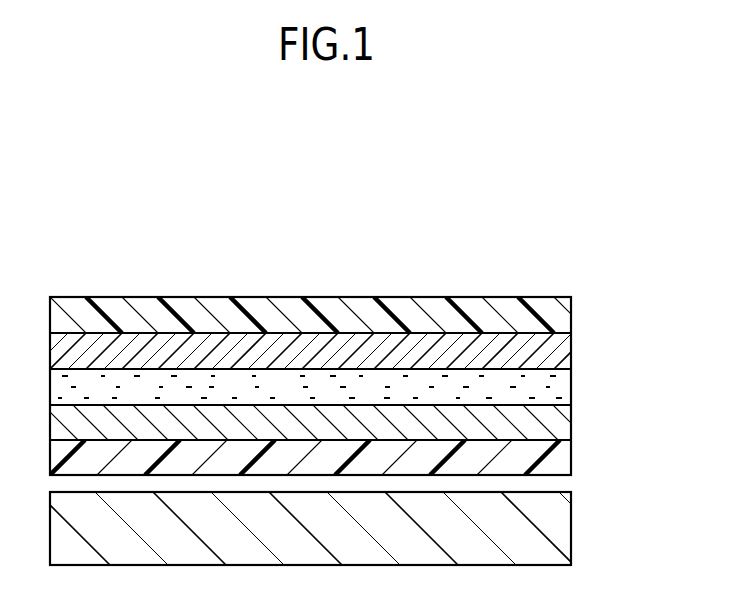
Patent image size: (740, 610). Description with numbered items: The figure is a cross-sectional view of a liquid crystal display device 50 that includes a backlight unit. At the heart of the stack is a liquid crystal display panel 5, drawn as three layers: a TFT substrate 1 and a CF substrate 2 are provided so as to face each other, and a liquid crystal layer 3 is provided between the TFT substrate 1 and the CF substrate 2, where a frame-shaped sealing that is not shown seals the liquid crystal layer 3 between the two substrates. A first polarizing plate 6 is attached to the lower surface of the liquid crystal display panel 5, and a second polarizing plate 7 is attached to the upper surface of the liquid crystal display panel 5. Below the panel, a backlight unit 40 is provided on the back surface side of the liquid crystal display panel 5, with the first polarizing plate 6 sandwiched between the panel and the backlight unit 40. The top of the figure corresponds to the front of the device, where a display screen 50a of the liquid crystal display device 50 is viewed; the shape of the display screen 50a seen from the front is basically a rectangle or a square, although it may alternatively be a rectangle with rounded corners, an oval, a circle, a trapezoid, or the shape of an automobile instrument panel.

The liquid crystal display device 50 is at (95, 255).
The display screen 50a is at (497, 297).
The second polarizing plate 7 is at (555, 313).
The liquid crystal display panel 5 is at (641, 333).
The CF substrate 2 is at (555, 352).
The liquid crystal layer 3 is at (555, 387).
The TFT substrate 1 is at (555, 422).
The first polarizing plate 6 is at (555, 462).
The backlight unit 40 is at (555, 520).